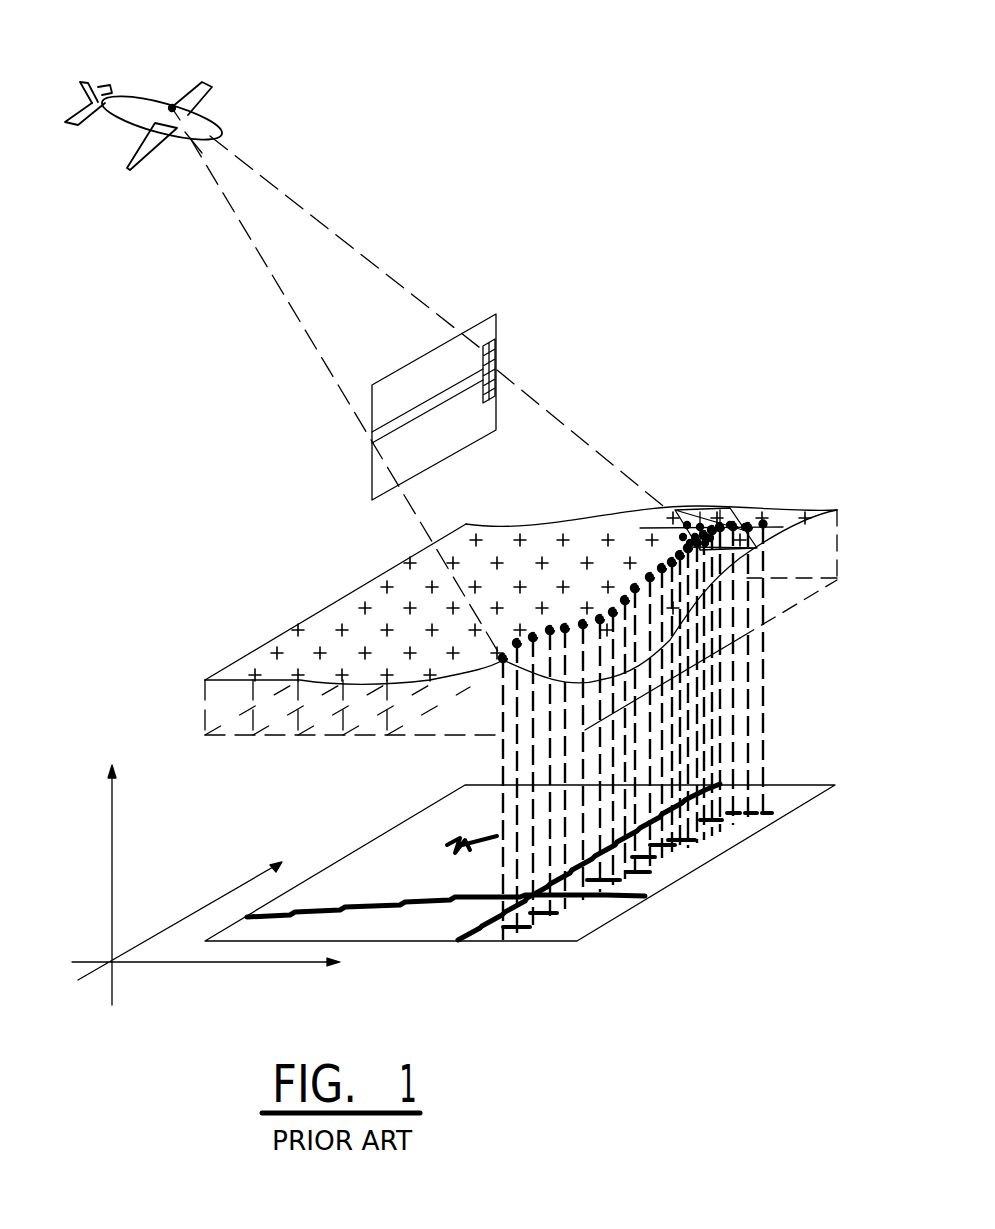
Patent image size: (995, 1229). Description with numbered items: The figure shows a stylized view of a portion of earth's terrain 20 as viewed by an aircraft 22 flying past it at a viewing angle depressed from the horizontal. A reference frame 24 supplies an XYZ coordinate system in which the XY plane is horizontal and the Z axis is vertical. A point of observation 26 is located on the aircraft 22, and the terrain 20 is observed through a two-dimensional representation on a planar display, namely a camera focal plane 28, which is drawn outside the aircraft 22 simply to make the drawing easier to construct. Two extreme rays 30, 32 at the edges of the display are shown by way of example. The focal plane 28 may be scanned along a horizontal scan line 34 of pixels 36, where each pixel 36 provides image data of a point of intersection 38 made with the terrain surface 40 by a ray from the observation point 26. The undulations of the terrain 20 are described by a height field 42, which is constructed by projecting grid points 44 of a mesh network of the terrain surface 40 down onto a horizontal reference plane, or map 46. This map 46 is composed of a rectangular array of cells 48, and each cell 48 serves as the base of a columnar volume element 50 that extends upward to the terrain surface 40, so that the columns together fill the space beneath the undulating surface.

The terrain 20 is at (357, 590).
The aircraft 22 is at (184, 140).
The reference frame 24 is at (203, 963).
The point of observation 26 is at (172, 108).
The camera focal plane 28 is at (483, 336).
The extreme ray 30 is at (255, 247).
The extreme ray 32 is at (258, 170).
The horizontal scan line 34 is at (428, 412).
The pixel 36 is at (497, 347).
The point of intersection 38 is at (690, 518).
The terrain surface 40 is at (797, 510).
The height field 42 is at (776, 709).
The grid points 44 is at (337, 628).
The map 46 is at (390, 848).
The cells 48 is at (655, 860).
The columnar volume elements 50 is at (765, 727).